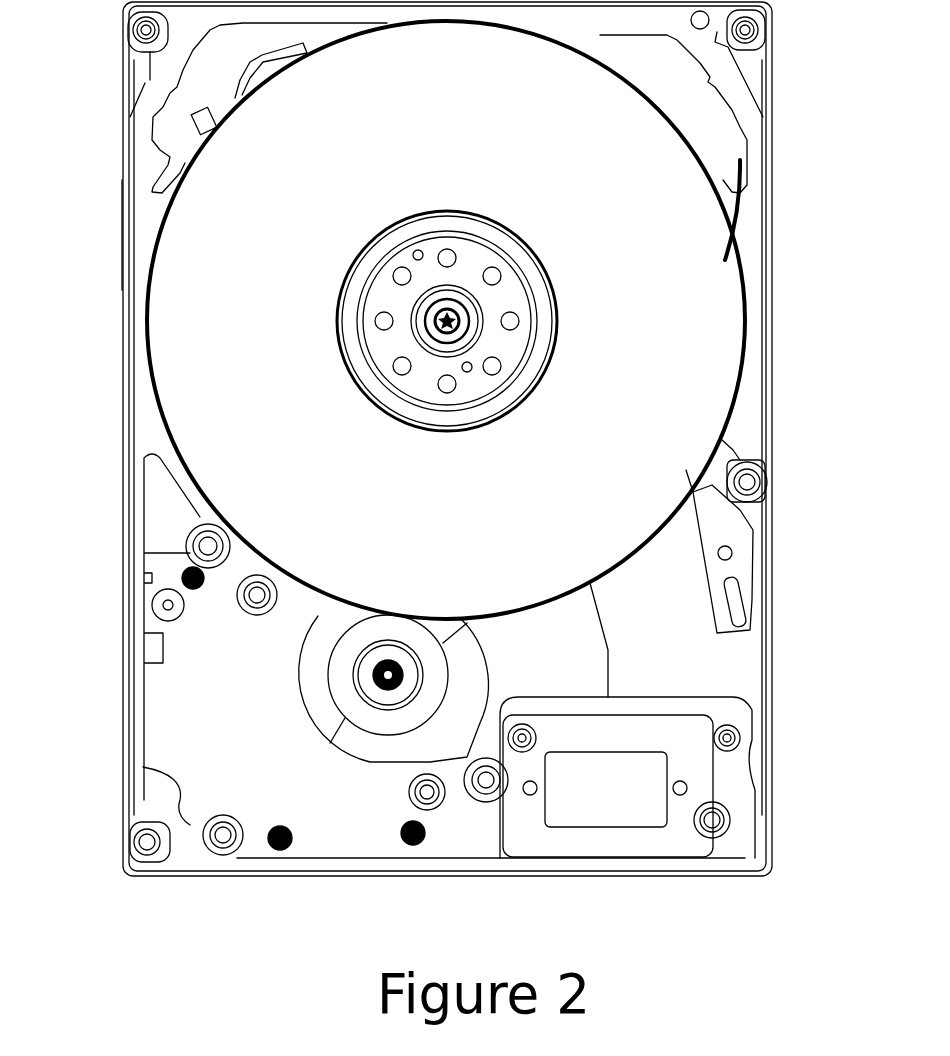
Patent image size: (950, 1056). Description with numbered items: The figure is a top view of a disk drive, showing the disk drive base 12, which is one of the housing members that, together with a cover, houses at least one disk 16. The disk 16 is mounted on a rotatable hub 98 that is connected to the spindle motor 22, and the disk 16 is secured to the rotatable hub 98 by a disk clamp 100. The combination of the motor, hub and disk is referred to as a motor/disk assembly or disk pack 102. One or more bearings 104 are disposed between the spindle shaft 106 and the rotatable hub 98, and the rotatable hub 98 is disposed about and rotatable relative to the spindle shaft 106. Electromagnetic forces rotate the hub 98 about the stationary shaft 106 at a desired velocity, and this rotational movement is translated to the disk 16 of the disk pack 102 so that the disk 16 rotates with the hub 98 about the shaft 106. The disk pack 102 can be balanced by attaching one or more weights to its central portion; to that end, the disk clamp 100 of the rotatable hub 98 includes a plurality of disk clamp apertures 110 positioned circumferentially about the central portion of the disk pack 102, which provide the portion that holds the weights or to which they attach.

The disk drive base 12 is at (143, 440).
The disk 16 is at (272, 244).
The spindle motor 22 is at (567, 312).
The rotatable hub 98 is at (348, 405).
The disk clamp 100 is at (513, 347).
The disk pack 102 is at (748, 213).
The bearing 104 is at (415, 318).
The spindle shaft 106 is at (463, 333).
The disk clamp aperture 110 is at (447, 249).